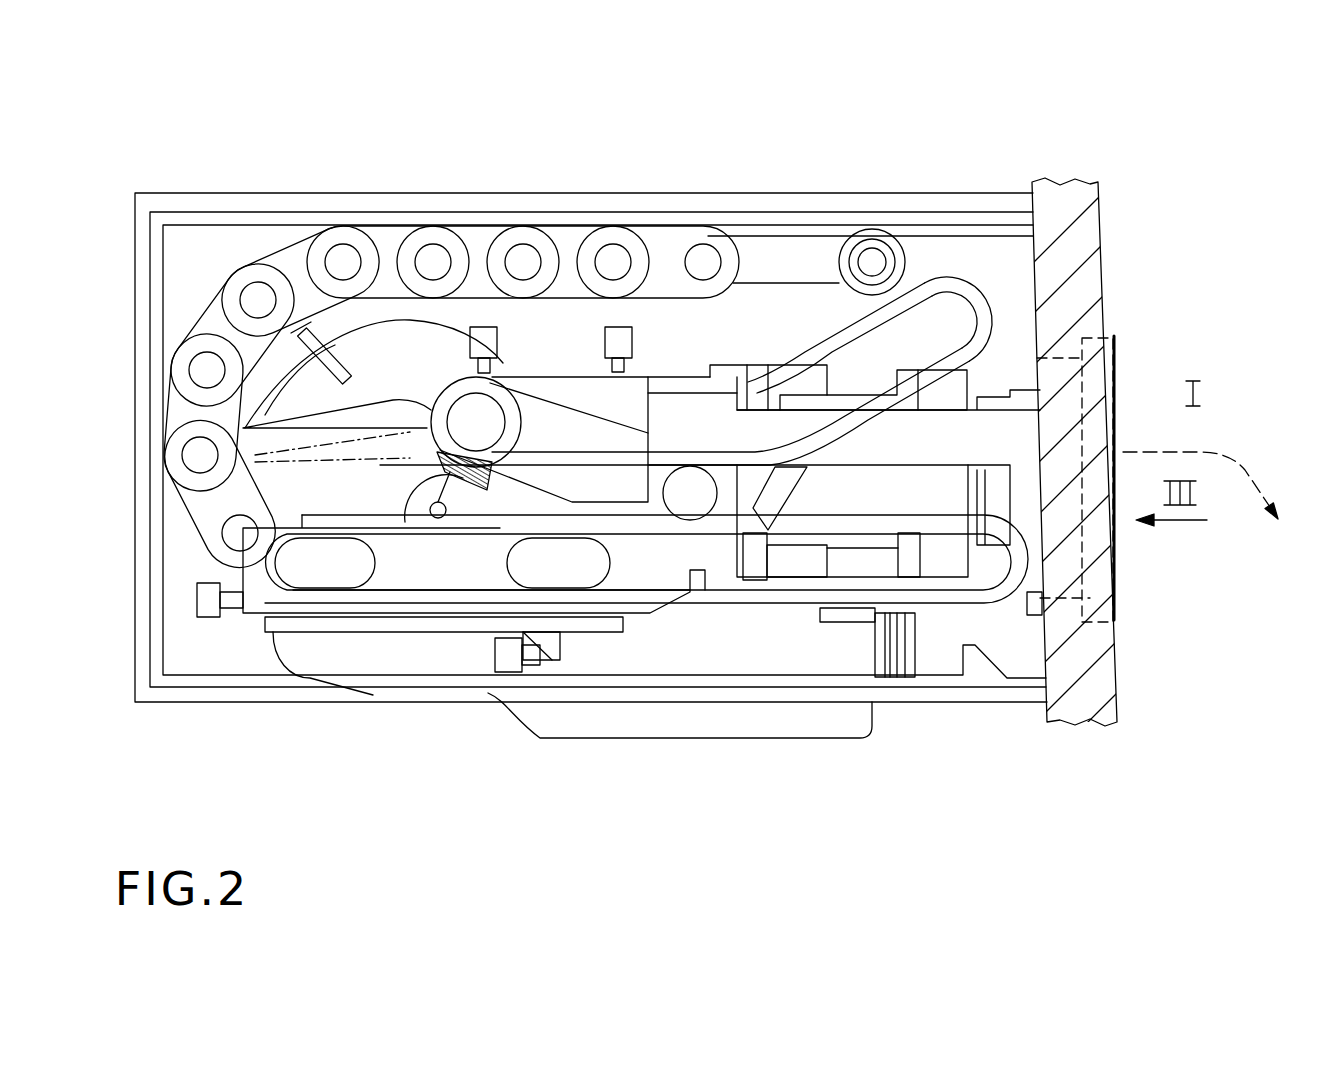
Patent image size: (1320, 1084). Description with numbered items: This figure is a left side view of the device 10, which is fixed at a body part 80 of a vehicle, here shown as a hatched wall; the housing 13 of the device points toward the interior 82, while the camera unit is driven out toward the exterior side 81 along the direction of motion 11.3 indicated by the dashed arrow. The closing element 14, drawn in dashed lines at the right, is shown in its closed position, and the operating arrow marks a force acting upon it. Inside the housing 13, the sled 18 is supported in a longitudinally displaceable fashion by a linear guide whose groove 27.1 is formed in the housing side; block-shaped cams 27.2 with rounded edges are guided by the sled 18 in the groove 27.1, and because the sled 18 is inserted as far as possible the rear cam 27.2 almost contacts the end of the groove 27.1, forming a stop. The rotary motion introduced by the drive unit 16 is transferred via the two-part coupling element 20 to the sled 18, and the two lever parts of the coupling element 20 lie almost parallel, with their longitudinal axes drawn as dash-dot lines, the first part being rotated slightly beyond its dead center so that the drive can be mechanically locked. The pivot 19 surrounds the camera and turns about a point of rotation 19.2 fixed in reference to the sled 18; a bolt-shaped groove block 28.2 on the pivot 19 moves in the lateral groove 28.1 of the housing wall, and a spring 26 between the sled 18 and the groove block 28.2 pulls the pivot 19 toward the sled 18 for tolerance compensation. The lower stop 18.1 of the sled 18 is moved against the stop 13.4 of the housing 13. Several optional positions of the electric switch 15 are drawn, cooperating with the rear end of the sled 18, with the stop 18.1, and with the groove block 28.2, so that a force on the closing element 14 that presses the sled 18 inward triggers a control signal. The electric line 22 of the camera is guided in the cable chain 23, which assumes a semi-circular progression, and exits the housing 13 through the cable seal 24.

The device 10 is at (682, 136).
The direction of motion of the camera unit 11.3 is at (1250, 490).
The housing 13 is at (258, 193).
The stop in the housing 13.4 is at (977, 662).
The closing element 14 is at (1112, 380).
The electric switch 15 is at (483, 345).
The drive unit 16 is at (657, 717).
The sled 18 is at (930, 452).
The stop at the sled 18.1 is at (555, 657).
The pivot 19 is at (573, 425).
The point of rotation 19.2 is at (692, 490).
The coupling element 20 is at (383, 410).
The electric line 22 is at (808, 258).
The cable chain 23 is at (230, 323).
The cable seal 24 is at (882, 235).
The spring 26 is at (425, 478).
The groove 27.1 is at (983, 573).
The cams 27.2 is at (297, 563).
The lateral groove 28.1 is at (947, 302).
The groove block 28.2 is at (463, 423).
The body part 80 is at (1088, 220).
The exterior side 81 is at (1224, 705).
The interior 82 is at (782, 891).